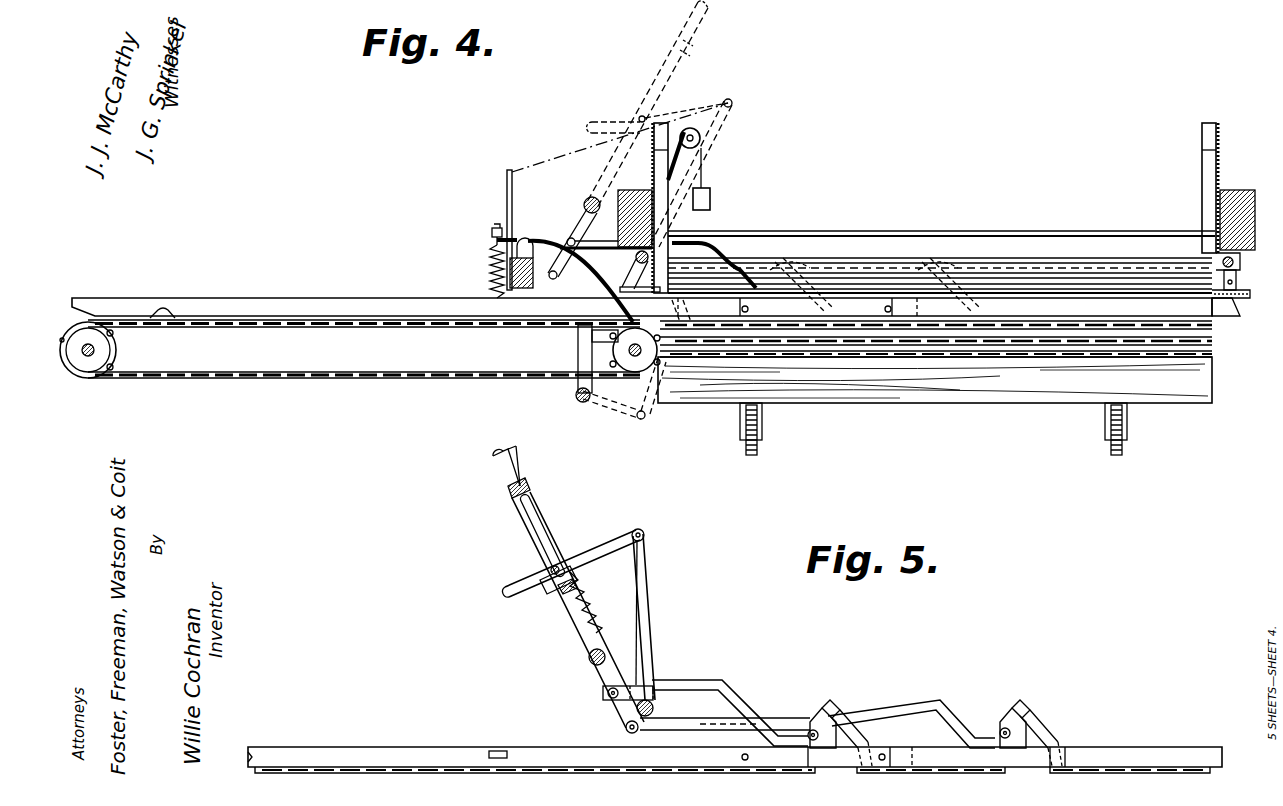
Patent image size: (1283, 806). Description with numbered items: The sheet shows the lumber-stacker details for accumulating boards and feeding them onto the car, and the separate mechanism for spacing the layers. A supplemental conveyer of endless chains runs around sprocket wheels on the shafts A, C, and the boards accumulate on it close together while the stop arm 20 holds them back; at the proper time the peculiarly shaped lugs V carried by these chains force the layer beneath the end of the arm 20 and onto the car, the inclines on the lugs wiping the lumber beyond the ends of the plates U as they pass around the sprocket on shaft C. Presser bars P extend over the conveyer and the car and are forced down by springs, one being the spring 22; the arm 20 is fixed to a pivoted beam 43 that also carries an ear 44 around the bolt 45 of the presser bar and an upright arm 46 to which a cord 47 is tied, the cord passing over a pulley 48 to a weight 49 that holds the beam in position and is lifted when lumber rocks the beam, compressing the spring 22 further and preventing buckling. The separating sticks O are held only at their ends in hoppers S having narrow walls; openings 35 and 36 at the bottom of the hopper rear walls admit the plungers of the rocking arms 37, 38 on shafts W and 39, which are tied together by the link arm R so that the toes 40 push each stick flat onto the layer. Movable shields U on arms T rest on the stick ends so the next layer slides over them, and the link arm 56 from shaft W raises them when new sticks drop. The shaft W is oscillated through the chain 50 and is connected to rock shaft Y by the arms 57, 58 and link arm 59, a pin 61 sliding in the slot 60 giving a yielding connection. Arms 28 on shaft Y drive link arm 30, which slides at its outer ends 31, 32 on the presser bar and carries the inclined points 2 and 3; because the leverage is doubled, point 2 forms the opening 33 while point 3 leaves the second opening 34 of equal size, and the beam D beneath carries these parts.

In FIG. 4, the separating point 2 is at (822, 311).
In FIG. 5, the separating point 2 is at (845, 729).
In FIG. 4, the separating point 3 is at (972, 311).
In FIG. 5, the separating point 3 is at (1042, 743).
In FIG. 4, the stop arm 20 is at (607, 301).
In FIG. 4, the spring 22 is at (489, 266).
In FIG. 5, the arm 28 is at (616, 705).
In FIG. 5, the link arm 30 is at (787, 712).
In FIG. 5, the outer end 31 is at (816, 730).
In FIG. 5, the outer end 32 is at (1002, 730).
In FIG. 4, the opening 33 is at (843, 358).
In FIG. 4, the second opening 34 is at (1036, 358).
In FIG. 4, the opening 35 is at (1236, 302).
In FIG. 4, the opening 36 is at (688, 290).
In FIG. 4, the rocking arm 37 is at (636, 258).
In FIG. 4, the rocking arm 38 is at (1238, 279).
In FIG. 4, the rock shaft 39 is at (1217, 258).
In FIG. 4, the toe or plunger 40 is at (1212, 297).
In FIG. 4, the beam 43 is at (511, 278).
In FIG. 4, the ear 44 is at (490, 240).
In FIG. 4, the bolt 45 is at (494, 226).
In FIG. 4, the upright arm 46 is at (505, 183).
In FIG. 4, the cord 47 is at (549, 165).
In FIG. 4, the pulley 48 is at (702, 140).
In FIG. 4, the weight 49 is at (713, 190).
In FIG. 4, the chain 50 is at (293, 380).
In FIG. 4, the link arm 56 is at (660, 405).
In FIG. 4, the arm 57 is at (738, 112).
In FIG. 5, the arm 57 is at (651, 598).
In FIG. 4, the arm 58 is at (695, 58).
In FIG. 4, the link arm 59 is at (700, 105).
In FIG. 5, the link arm 59 is at (608, 542).
In FIG. 5, the longitudinal slot 60 is at (531, 524).
In FIG. 5, the pin 61 is at (548, 570).
In FIG. 4, the shaft A is at (96, 350).
In FIG. 4, the shaft C is at (628, 350).
In FIG. 4, the frame beam D is at (935, 362).
In FIG. 4, the separating sticks O is at (836, 273).
In FIG. 4, the presser bar P is at (312, 306).
In FIG. 5, the presser bar P is at (437, 747).
In FIG. 4, the stop Q is at (548, 243).
In FIG. 4, the link arm R is at (941, 224).
In FIG. 4, the hopper S is at (1200, 170).
In FIG. 4, the arm T is at (577, 397).
In FIG. 4, the movable plate or shield U is at (671, 310).
In FIG. 4, the lug V is at (163, 310).
In FIG. 4, the rock shaft W is at (665, 246).
In FIG. 5, the rock shaft W is at (652, 702).
In FIG. 4, the rock shaft Y is at (586, 201).
In FIG. 5, the rock shaft Y is at (588, 658).